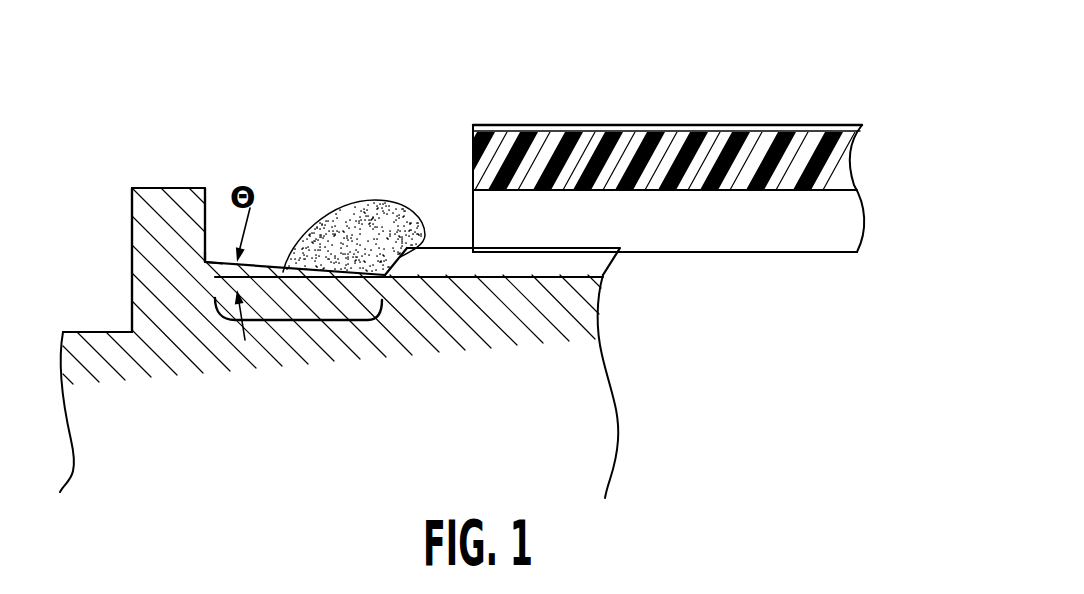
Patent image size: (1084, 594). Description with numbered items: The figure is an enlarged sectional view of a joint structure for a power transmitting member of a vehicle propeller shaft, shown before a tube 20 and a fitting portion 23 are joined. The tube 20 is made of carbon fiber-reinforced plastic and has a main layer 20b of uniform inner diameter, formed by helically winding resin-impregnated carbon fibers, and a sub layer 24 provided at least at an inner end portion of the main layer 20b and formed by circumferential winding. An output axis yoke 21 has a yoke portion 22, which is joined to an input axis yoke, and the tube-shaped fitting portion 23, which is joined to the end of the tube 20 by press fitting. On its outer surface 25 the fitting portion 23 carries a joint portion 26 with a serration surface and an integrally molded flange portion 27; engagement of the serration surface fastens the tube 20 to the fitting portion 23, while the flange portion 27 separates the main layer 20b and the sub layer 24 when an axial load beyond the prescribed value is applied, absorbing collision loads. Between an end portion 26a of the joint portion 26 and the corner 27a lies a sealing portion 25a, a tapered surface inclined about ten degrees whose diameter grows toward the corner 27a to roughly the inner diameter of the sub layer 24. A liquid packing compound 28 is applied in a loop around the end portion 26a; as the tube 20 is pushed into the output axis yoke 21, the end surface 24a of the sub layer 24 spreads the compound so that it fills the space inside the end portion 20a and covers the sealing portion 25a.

The tube 20 is at (620, 110).
The end portion of the sub layer 20a is at (520, 225).
The main layer 20b is at (726, 140).
The output axis yoke 21 is at (607, 370).
The yoke portion 22 is at (92, 352).
The fitting portion 23 is at (603, 440).
The sub layer 24 is at (857, 220).
The end surface of the sub layer 24a is at (473, 206).
The outer surface of the fitting portion 25 is at (258, 262).
The sealing portion 25a is at (297, 323).
The joint portion 26 is at (479, 262).
The end portion of the joint portion 26a is at (407, 268).
The flange portion 27 is at (170, 198).
The corner 27a is at (219, 262).
The liquid packing compound 28 is at (352, 218).